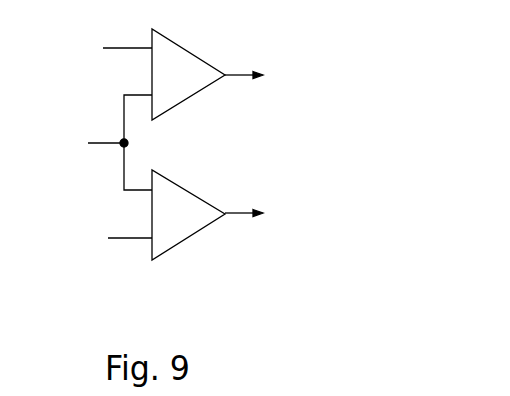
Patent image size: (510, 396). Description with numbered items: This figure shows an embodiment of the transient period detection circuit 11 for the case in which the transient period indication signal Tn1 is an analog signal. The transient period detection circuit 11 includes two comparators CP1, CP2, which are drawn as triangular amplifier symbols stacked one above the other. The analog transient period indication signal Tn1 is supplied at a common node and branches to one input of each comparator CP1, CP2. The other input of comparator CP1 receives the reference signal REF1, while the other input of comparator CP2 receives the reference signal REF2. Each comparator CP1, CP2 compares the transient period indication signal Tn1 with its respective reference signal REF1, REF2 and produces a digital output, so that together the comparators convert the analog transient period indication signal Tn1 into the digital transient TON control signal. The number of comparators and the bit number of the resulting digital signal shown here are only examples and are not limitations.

The transient period detection circuit 11 is at (196, 168).
The comparator CP1 is at (191, 95).
The comparator CP2 is at (192, 238).
The reference signal REF1 is at (90, 47).
The reference signal REF2 is at (92, 244).
The transient period indication signal Tn1 is at (78, 142).